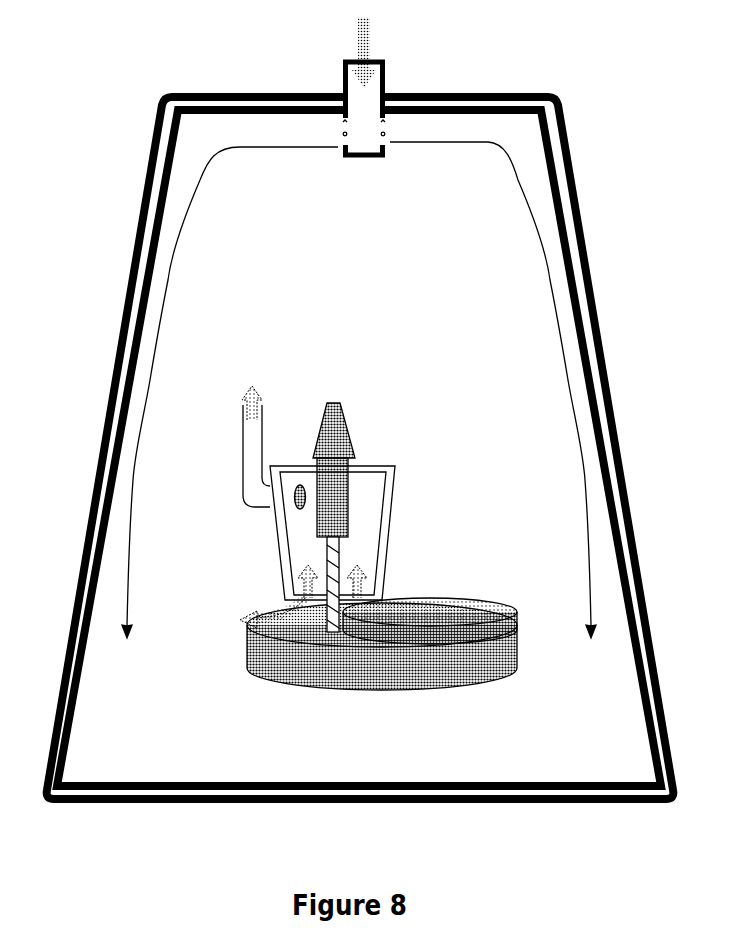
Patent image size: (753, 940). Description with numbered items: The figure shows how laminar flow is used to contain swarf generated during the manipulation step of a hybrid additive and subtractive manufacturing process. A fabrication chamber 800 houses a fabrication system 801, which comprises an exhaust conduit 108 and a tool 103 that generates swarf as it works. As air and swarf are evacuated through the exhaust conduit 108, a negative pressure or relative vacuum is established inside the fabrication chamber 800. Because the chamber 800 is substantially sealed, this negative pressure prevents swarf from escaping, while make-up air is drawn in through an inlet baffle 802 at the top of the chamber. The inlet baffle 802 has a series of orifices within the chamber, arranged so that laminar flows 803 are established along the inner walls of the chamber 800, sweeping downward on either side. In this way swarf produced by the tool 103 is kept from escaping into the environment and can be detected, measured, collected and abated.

The fabrication chamber 800 is at (571, 190).
The fabrication system 801 is at (351, 502).
The inlet baffle 802 is at (386, 74).
The laminar flows 803 is at (197, 193).
The exhaust conduit 108 is at (243, 462).
The tool 103 is at (327, 546).